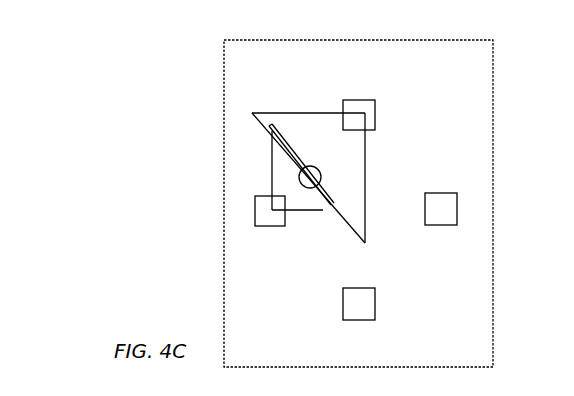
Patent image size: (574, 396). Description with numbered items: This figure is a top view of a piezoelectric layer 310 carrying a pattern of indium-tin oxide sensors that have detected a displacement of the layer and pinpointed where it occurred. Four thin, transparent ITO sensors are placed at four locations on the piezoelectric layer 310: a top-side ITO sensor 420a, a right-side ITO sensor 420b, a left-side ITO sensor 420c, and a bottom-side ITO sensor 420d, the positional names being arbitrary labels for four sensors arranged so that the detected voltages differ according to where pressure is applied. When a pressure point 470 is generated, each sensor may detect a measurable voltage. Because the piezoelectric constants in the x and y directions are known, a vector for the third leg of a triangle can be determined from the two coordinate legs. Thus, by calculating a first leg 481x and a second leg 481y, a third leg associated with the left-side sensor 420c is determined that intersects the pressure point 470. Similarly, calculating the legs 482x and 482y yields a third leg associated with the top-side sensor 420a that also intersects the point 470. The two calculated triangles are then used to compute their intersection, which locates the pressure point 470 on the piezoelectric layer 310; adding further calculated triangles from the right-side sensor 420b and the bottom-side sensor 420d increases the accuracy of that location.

The piezoelectric layer 310 is at (222, 44).
The pressure point 470 is at (297, 172).
The first leg 481x is at (318, 214).
The second leg 481y is at (269, 148).
The x-direction leg 482x is at (313, 109).
The y-direction leg 482y is at (368, 183).
The top-side ITO sensor 420a is at (378, 101).
The right-side ITO sensor 420b is at (459, 208).
The left-side ITO sensor 420c is at (253, 206).
The bottom-side ITO sensor 420d is at (376, 299).